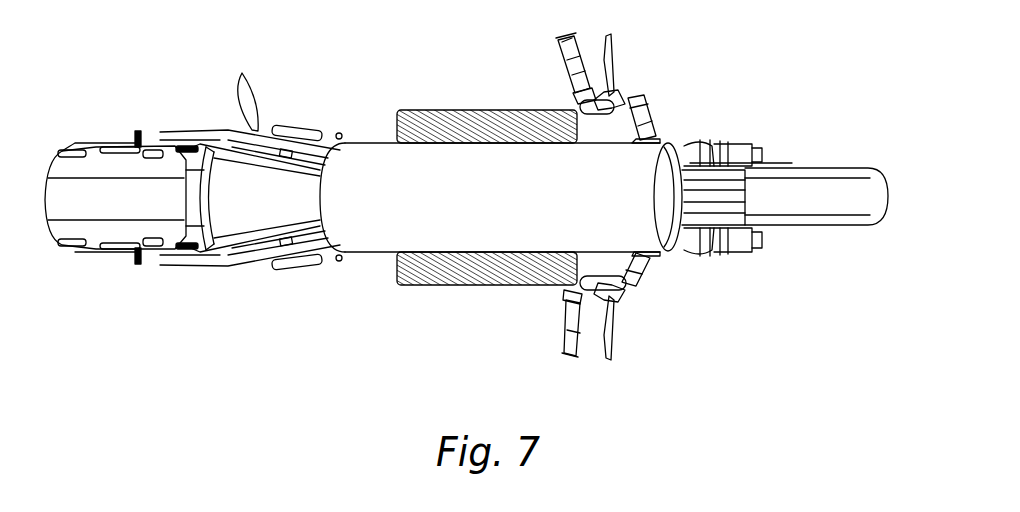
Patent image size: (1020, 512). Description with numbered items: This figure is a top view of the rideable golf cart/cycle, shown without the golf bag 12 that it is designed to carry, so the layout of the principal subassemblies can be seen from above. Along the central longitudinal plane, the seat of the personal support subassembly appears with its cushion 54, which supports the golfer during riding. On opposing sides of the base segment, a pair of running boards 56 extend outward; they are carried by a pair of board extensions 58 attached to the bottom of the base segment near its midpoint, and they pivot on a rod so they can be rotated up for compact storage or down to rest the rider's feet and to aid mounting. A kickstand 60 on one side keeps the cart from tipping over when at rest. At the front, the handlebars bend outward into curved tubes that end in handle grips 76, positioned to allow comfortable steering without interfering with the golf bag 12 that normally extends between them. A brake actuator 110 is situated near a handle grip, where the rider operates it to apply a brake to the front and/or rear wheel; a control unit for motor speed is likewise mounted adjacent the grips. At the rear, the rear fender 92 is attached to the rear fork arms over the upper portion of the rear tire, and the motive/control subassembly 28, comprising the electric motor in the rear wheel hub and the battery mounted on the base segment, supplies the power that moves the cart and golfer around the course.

The golf bag 12 is at (502, 209).
The motive/control subassembly 28 is at (560, 300).
The cushion 54 is at (257, 212).
The running boards 56 is at (486, 285).
The board extensions 58 is at (487, 145).
The kickstand 60 is at (256, 96).
The handle grips 76 is at (562, 48).
The rear fender 92 is at (142, 209).
The brake actuator 110 is at (614, 66).